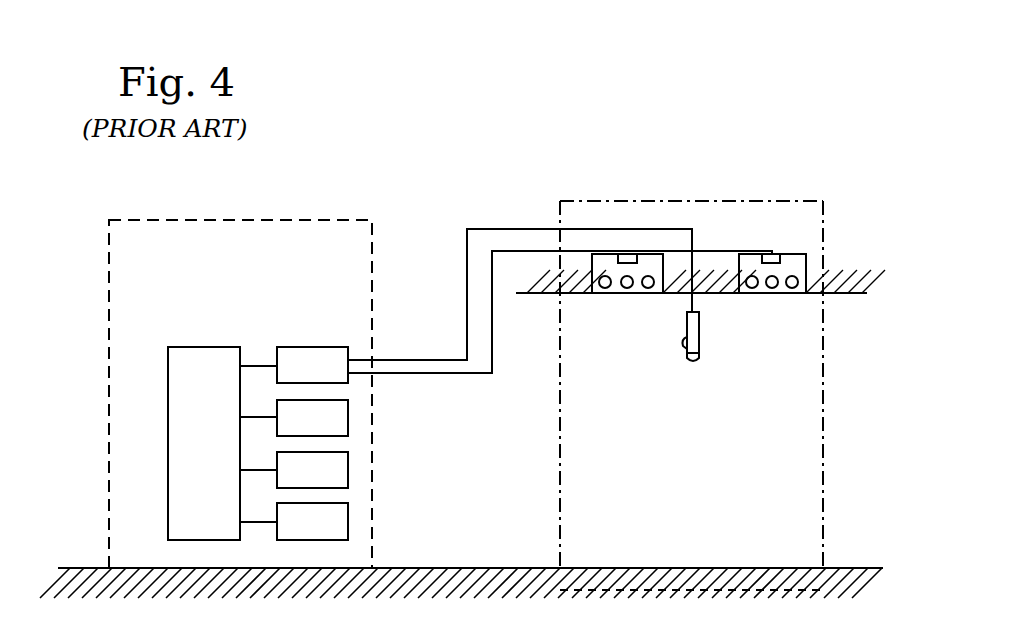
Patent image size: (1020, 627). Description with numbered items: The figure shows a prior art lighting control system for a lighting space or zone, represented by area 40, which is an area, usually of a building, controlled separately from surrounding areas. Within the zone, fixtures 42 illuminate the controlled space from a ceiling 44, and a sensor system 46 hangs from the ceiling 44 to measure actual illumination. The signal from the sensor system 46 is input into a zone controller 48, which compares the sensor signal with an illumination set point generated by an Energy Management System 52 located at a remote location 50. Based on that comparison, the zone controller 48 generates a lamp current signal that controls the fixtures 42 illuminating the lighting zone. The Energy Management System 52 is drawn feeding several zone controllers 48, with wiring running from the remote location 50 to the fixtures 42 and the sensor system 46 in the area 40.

The lighting zone area 40 is at (733, 201).
The fixture 42 is at (627, 296).
The ceiling 44 is at (812, 302).
The sensor system 46 is at (700, 340).
The zone controller 48 is at (327, 347).
The remote location 50 is at (272, 220).
The Energy Management System 52 is at (215, 347).